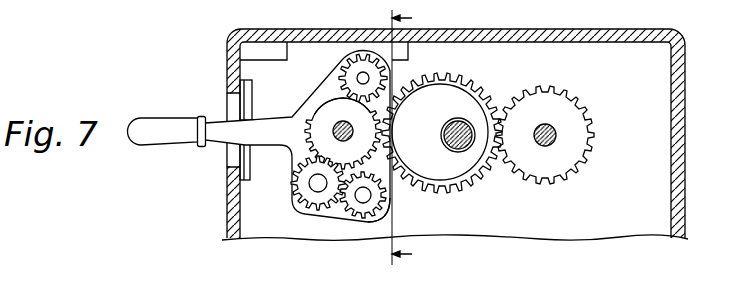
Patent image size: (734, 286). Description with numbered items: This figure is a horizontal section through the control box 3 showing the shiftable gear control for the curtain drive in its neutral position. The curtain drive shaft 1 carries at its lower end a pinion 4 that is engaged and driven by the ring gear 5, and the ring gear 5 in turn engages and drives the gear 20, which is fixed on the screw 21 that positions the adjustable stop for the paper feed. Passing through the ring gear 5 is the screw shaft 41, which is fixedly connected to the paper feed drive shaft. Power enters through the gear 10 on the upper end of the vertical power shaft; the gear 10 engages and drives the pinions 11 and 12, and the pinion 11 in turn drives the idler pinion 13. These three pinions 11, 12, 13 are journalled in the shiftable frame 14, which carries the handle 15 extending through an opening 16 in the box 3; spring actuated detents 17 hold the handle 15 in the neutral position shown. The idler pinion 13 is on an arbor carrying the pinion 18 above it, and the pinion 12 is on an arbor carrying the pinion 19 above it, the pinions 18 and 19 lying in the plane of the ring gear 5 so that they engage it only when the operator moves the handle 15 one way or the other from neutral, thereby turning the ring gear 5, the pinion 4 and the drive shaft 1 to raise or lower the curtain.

The drive shaft 1 is at (390, 129).
The control box 3 is at (685, 112).
The pinion 4 is at (318, 130).
The ring gear 5 is at (447, 103).
The gear 10 is at (335, 103).
The pinion 11 is at (307, 207).
The pinion 12 is at (347, 74).
The idler pinion 13 is at (355, 185).
The shiftable frame 14 is at (302, 243).
The handle 15 is at (147, 125).
The opening 16 is at (230, 168).
The spring actuated detents 17 is at (250, 166).
The pinion 18 is at (389, 208).
The pinion 19 is at (392, 75).
The gear 20 is at (552, 103).
The screw 21 is at (556, 135).
The screw shaft 41 is at (467, 125).